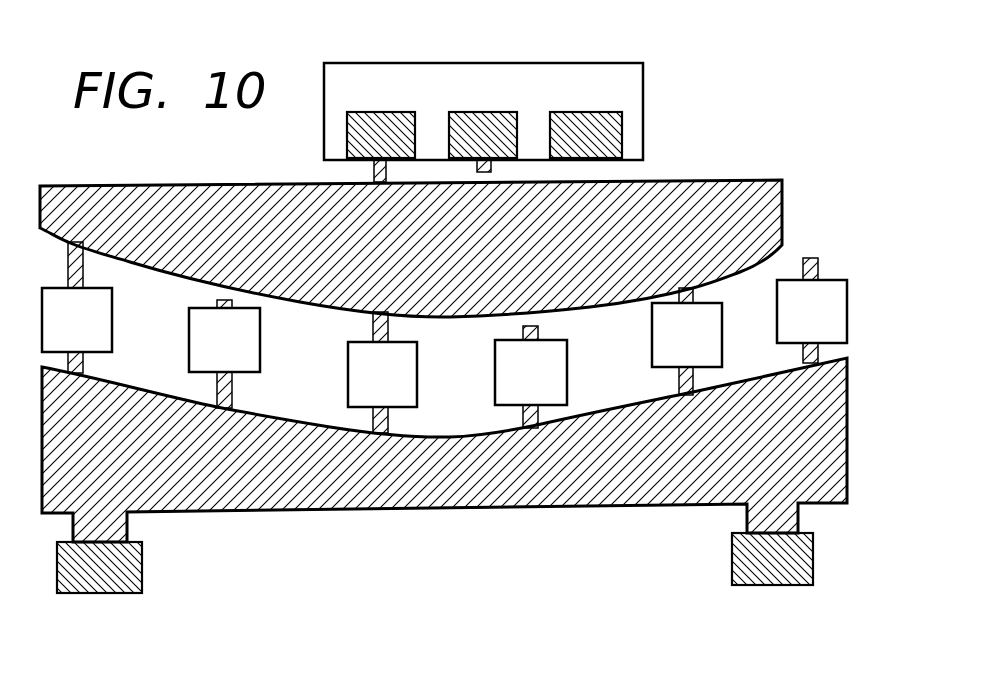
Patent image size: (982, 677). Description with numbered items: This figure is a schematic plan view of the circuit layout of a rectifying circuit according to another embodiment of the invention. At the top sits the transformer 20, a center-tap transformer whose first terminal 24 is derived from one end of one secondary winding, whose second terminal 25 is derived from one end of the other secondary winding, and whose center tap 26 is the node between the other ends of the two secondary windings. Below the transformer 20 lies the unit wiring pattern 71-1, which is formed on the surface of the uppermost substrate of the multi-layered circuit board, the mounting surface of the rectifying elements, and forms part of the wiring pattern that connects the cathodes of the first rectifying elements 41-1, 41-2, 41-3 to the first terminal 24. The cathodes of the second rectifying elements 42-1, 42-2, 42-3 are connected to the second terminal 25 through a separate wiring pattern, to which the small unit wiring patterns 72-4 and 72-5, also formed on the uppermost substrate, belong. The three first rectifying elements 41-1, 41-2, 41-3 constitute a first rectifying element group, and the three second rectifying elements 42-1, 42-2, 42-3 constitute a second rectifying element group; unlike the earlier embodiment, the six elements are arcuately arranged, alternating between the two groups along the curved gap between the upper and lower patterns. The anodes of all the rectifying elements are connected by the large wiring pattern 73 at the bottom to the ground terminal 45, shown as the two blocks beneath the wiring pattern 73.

The transformer 20 is at (643, 88).
The first terminal 24 is at (398, 120).
The second terminal 25 is at (493, 120).
The center tap 26 is at (599, 120).
The unit wiring pattern 72-5 is at (491, 165).
The unit wiring pattern 71-1 is at (736, 180).
The unit wiring pattern 72-4 is at (217, 304).
The first rectifying element 41-1 is at (77, 307).
The second rectifying element 42-1 is at (224, 358).
The first rectifying element 41-2 is at (382, 372).
The second rectifying element 42-2 is at (531, 384).
The first rectifying element 41-3 is at (687, 341).
The second rectifying element 42-3 is at (812, 321).
The wiring pattern 73 is at (326, 511).
The ground terminal 45 is at (142, 563).